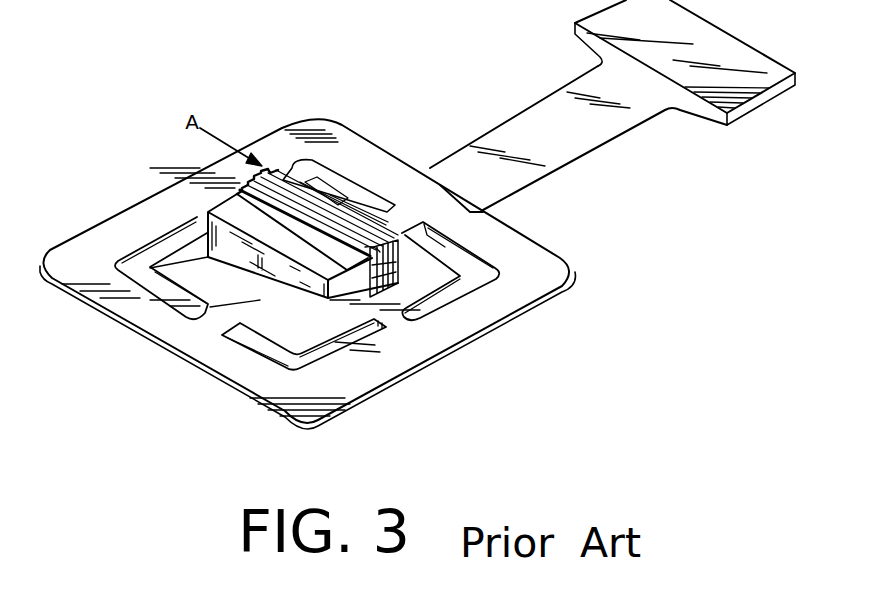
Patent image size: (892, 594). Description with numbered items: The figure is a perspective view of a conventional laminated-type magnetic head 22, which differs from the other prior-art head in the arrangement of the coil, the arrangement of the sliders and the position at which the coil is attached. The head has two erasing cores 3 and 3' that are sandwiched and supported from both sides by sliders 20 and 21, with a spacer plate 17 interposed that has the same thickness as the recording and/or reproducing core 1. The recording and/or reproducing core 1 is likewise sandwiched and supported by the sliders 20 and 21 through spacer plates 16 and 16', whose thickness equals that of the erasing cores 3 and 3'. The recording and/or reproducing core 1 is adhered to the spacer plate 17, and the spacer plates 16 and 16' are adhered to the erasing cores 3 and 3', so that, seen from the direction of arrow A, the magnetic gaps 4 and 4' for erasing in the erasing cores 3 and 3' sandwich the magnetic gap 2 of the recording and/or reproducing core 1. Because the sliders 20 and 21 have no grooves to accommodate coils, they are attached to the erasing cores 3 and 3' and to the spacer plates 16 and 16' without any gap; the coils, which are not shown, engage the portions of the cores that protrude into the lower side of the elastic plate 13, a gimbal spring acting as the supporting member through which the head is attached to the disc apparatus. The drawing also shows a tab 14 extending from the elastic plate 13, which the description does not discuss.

The recording and/or reproducing core 1 is at (280, 183).
The magnetic gap 2 is at (307, 180).
The erasing core 3 is at (401, 268).
The erasing core 3' is at (396, 311).
The magnetic gap for erasing 4 is at (331, 164).
The magnetic gap for erasing 4' is at (344, 174).
The elastic plate 13 is at (118, 228).
The connecting strip with terminal tab 14 is at (530, 115).
The spacer plate 16 is at (305, 169).
The spacer plate 16' is at (271, 191).
The spacer plate 17 is at (357, 223).
The slider 20 is at (338, 290).
The slider 21 is at (480, 216).
The magnetic head 22 is at (265, 274).